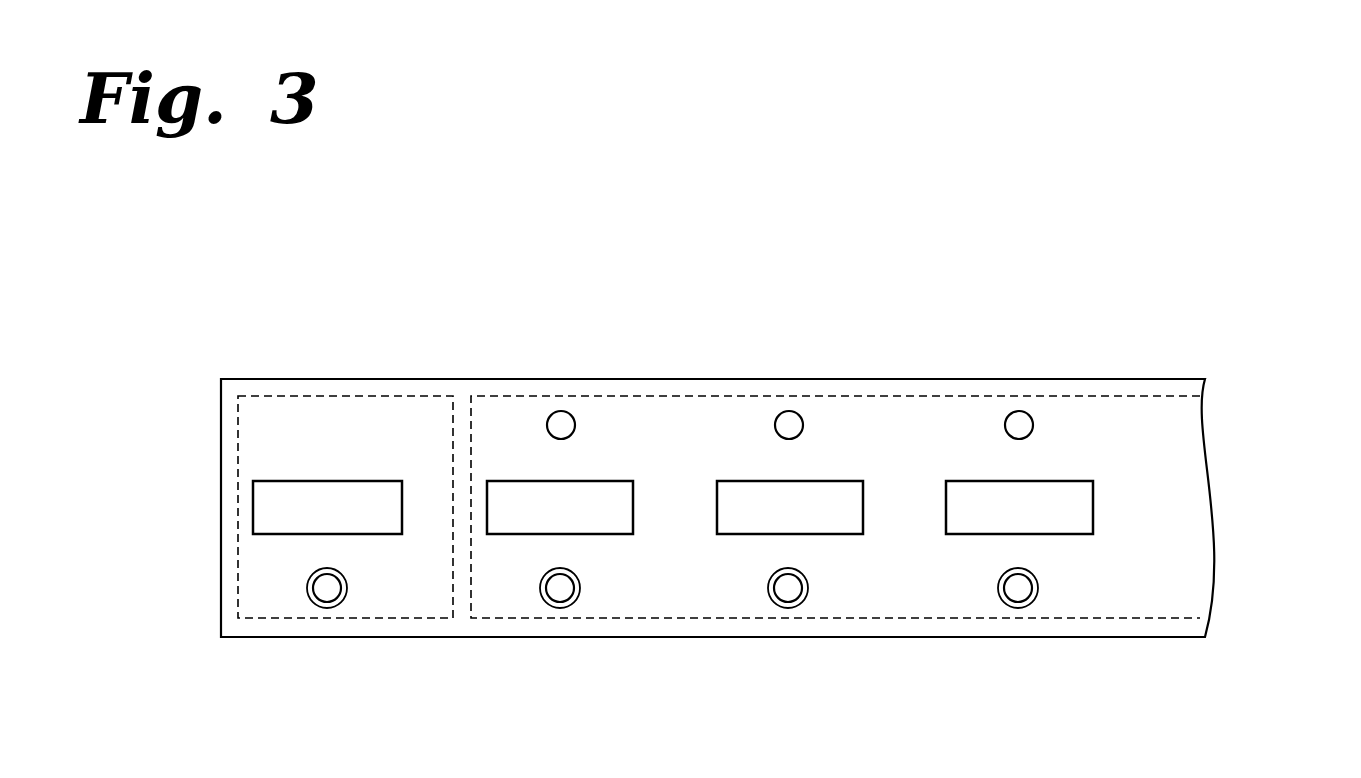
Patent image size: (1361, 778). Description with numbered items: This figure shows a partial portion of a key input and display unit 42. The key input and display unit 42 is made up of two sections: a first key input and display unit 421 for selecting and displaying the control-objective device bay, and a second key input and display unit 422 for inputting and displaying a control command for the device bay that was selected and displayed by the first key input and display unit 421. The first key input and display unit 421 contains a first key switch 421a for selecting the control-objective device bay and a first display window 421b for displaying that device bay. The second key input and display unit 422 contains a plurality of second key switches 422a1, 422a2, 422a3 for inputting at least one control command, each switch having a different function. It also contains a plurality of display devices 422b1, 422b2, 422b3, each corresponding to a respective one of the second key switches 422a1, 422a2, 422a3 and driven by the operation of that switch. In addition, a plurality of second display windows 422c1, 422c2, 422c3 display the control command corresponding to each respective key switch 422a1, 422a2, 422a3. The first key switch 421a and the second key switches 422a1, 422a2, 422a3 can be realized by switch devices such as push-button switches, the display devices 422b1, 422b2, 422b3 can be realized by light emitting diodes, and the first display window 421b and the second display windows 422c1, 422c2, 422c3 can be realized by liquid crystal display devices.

The key input and display unit 42 is at (1135, 379).
The first key input and display unit 421 is at (328, 396).
The first key switch 421a is at (327, 608).
The first display window 421b is at (253, 505).
The second key input and display unit 422 is at (930, 618).
The second key switch 422a1 is at (560, 608).
The second key switch 422a2 is at (788, 608).
The second key switch 422a3 is at (1018, 608).
The display device 422b1 is at (561, 411).
The display device 422b2 is at (789, 411).
The display device 422b3 is at (1019, 411).
The second display window 422c1 is at (510, 481).
The second display window 422c2 is at (840, 481).
The second display window 422c3 is at (1063, 481).